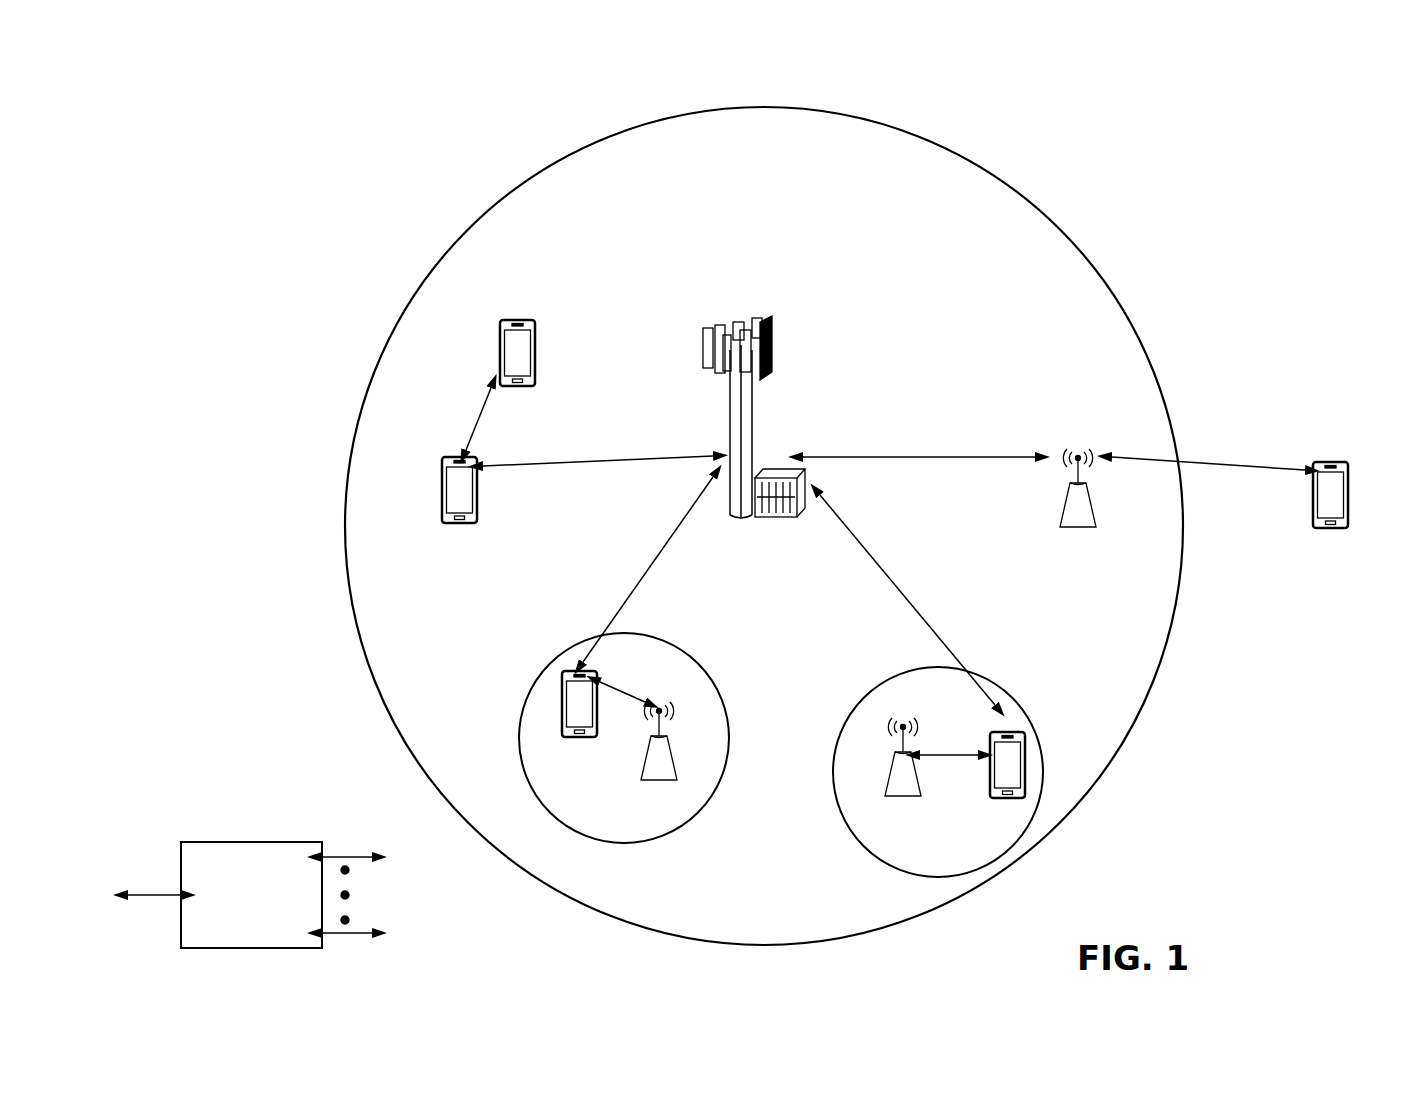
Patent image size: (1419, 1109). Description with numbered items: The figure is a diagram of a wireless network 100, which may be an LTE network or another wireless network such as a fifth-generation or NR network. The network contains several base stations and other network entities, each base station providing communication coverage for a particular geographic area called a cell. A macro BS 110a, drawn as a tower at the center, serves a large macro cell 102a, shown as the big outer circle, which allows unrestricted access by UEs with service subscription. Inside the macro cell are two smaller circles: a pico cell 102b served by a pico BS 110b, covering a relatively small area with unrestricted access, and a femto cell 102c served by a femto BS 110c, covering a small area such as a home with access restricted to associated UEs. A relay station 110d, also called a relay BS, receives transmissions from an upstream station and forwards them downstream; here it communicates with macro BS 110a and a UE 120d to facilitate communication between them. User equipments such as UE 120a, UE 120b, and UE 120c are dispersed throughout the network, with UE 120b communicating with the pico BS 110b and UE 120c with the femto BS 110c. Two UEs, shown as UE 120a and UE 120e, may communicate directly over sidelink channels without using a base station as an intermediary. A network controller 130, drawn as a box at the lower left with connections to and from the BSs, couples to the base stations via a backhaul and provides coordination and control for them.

The wireless network 100 is at (236, 104).
The macro cell 102a is at (1041, 212).
The pico cell 102b is at (713, 681).
The femto cell 102c is at (877, 687).
The macro BS 110a is at (763, 308).
The pico BS 110b is at (677, 767).
The femto BS 110c is at (890, 780).
The relay station 110d is at (1078, 447).
The UE 120a is at (441, 484).
The UE 120b is at (570, 740).
The UE 120c is at (996, 800).
The UE 120d is at (1341, 462).
The UE 120e is at (501, 337).
The network controller 130 is at (250, 842).